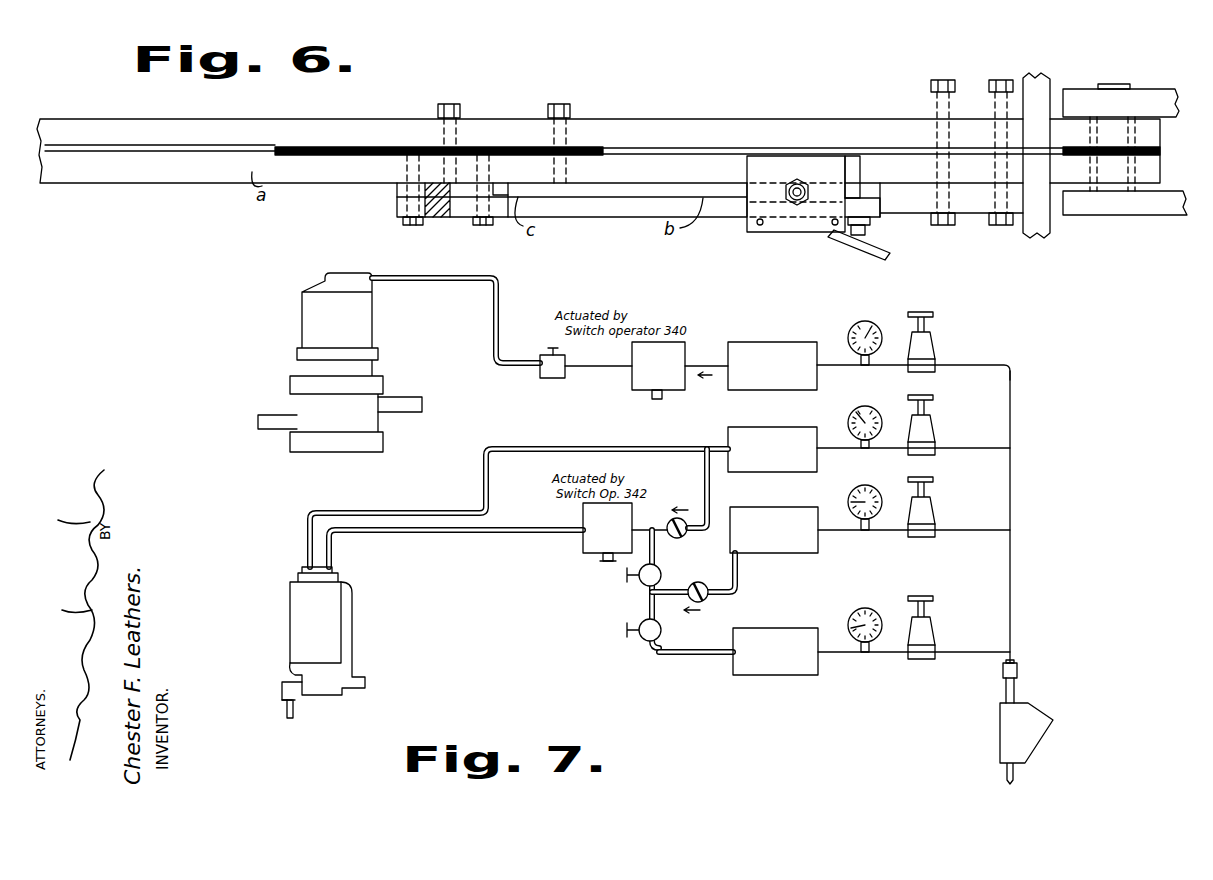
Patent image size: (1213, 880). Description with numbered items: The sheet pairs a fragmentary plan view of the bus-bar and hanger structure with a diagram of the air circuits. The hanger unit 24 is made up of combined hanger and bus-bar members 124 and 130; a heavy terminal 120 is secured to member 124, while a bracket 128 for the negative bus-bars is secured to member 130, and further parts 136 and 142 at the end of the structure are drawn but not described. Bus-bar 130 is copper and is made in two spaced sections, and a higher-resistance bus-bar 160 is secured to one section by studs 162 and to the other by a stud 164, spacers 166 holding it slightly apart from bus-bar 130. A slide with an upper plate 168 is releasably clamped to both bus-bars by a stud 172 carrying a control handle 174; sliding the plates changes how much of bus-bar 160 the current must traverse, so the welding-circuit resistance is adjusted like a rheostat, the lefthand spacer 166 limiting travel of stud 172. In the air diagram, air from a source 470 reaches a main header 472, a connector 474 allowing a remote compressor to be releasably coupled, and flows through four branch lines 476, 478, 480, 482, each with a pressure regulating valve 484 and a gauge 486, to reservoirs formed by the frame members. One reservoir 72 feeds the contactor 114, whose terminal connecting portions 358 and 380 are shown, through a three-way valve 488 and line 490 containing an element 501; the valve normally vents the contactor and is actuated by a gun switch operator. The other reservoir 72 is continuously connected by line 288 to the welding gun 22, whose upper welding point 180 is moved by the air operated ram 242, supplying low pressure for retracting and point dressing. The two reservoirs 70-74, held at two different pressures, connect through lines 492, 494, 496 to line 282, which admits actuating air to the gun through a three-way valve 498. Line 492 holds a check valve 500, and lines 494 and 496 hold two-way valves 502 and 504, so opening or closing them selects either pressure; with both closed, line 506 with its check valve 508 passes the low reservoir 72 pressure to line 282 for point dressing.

In FIG. 6, the hanger and bus-bar unit 24 is at (594, 125).
In FIG. 6, the combined hanger and bus-bar member 124 is at (850, 130).
In FIG. 6, the heavy terminal 120 is at (1027, 80).
In FIG. 6, the bracket 128 is at (1036, 238).
In FIG. 6, the flange plate 136 is at (1070, 90).
In FIG. 6, the bolt 142 is at (1108, 86).
In FIG. 6, the spacers 166 is at (400, 190).
In FIG. 6, the combined bus-bar and hanger member 130 is at (343, 184).
In FIG. 6, the studs 162 is at (428, 226).
In FIG. 6, the bus-bar 160 is at (600, 203).
In FIG. 6, the upper plate 168 is at (780, 232).
In FIG. 6, the stud 172 is at (797, 183).
In FIG. 6, the studs 164 is at (853, 237).
In FIG. 6, the control handle 174 is at (877, 258).
In FIG. 7, the contactor 114 is at (386, 335).
In FIG. 7, the radially projecting connecting portion 358 is at (262, 428).
In FIG. 7, the radially projecting connecting portion 380 is at (410, 414).
In FIG. 7, the line 490 is at (500, 334).
In FIG. 7, the valve 501 is at (568, 360).
In FIG. 7, the three-way valve 488 is at (632, 380).
In FIG. 7, the reservoirs 72 is at (772, 407).
In FIG. 7, the line 288 is at (562, 450).
In FIG. 7, the line 282 is at (556, 528).
In FIG. 7, the line 506 is at (712, 505).
In FIG. 7, the three-way valve 498 is at (593, 554).
In FIG. 7, the check valve 508 is at (675, 540).
In FIG. 7, the line 496 is at (652, 556).
In FIG. 7, the two-way valve 502 is at (647, 578).
In FIG. 7, the two-way valve 504 is at (638, 631).
In FIG. 7, the check valve 500 is at (708, 584).
In FIG. 7, the line 492 is at (713, 598).
In FIG. 7, the line 494 is at (695, 642).
In FIG. 7, the reservoirs 70-74 is at (774, 591).
In FIG. 7, the welding gun 22 is at (334, 647).
In FIG. 7, the air operated ram 242 is at (296, 658).
In FIG. 7, the upper welding point 180 is at (295, 712).
In FIG. 7, the branch line 476 is at (945, 364).
In FIG. 7, the branch line 478 is at (965, 447).
In FIG. 7, the branch line 480 is at (965, 529).
In FIG. 7, the branch line 482 is at (947, 651).
In FIG. 7, the main header 472 is at (1012, 614).
In FIG. 7, the connector 474 is at (1018, 672).
In FIG. 7, the air source 470 is at (1030, 716).
In FIG. 7, the gauges 486 is at (852, 328).
In FIG. 7, the pressure regulating valves 484 is at (925, 345).